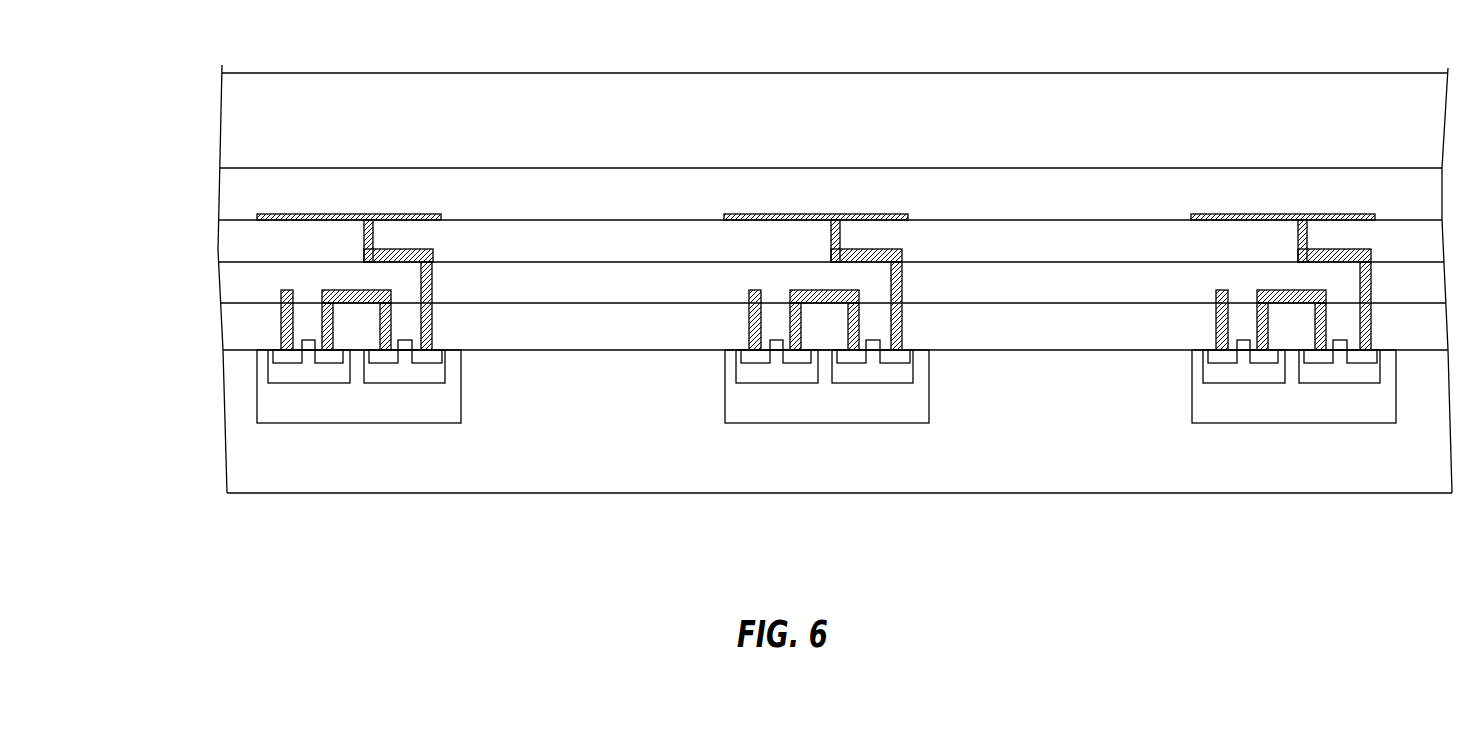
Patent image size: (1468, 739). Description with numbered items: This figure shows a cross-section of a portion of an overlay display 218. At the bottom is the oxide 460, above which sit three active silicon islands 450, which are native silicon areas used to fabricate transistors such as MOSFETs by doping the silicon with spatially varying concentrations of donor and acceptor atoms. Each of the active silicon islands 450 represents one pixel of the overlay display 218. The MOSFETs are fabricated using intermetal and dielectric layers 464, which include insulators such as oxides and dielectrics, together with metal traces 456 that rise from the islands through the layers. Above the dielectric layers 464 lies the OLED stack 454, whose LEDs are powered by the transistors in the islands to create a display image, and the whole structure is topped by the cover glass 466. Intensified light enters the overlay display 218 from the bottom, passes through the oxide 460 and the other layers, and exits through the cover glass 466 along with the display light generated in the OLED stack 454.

The overlay display 218 is at (563, 51).
The active silicon islands 450 is at (1371, 413).
The OLED stack 454 is at (671, 215).
The metal traces 456 is at (364, 236).
The oxide 460 is at (648, 473).
The dielectric layers 464 is at (215, 347).
The cover glass 466 is at (671, 146).